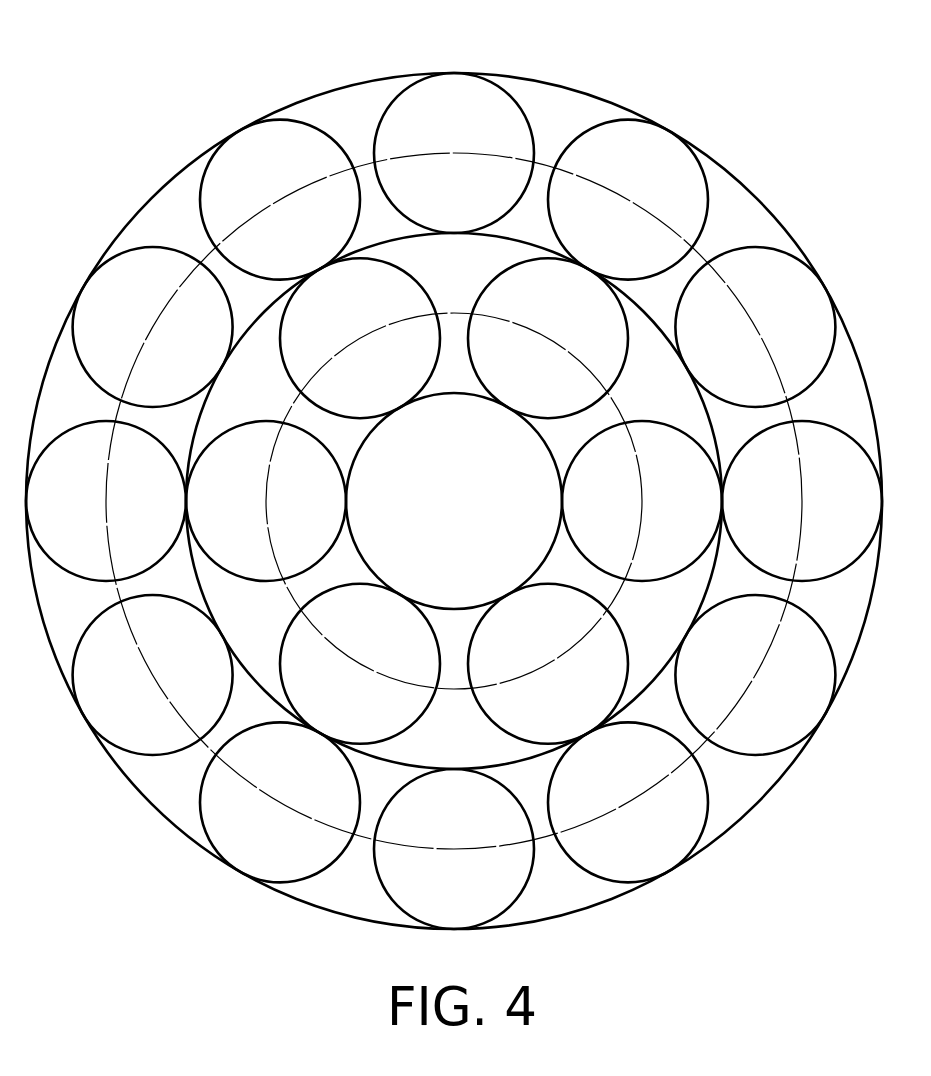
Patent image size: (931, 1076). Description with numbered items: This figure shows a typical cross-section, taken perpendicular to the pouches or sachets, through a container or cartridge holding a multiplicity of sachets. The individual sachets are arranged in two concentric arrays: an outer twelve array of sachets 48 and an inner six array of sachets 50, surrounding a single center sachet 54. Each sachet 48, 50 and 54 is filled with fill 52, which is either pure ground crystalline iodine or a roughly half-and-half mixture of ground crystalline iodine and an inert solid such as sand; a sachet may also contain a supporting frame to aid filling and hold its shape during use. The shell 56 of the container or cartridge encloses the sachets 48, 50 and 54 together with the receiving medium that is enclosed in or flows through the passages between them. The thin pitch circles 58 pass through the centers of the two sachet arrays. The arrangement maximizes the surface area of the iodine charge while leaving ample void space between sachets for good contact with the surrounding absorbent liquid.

The sachet 48 is at (468, 100).
The sachet 50 is at (408, 293).
The fill 52 is at (247, 187).
The center sachet 54 is at (515, 457).
The shell 56 is at (758, 800).
The interstitial space / pitch circle 58 is at (728, 215).